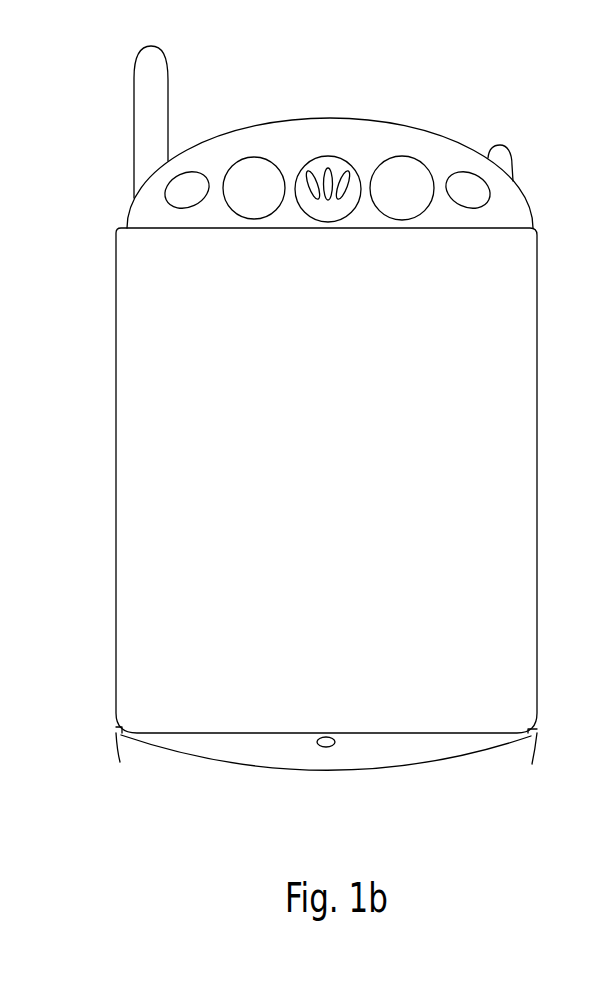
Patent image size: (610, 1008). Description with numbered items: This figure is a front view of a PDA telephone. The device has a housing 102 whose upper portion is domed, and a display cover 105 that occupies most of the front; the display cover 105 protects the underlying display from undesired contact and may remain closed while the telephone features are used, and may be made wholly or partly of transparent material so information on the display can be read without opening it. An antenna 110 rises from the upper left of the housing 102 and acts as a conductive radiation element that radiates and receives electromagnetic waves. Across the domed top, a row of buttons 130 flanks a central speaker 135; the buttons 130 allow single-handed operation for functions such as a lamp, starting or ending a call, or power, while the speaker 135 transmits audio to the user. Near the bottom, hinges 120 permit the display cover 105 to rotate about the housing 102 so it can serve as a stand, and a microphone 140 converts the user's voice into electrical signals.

The housing 102 is at (528, 213).
The display cover 105 is at (520, 368).
The antenna 110 is at (146, 62).
The hinges 120 is at (121, 761).
The buttons 130 is at (248, 175).
The speaker 135 is at (333, 157).
The microphone 140 is at (325, 748).